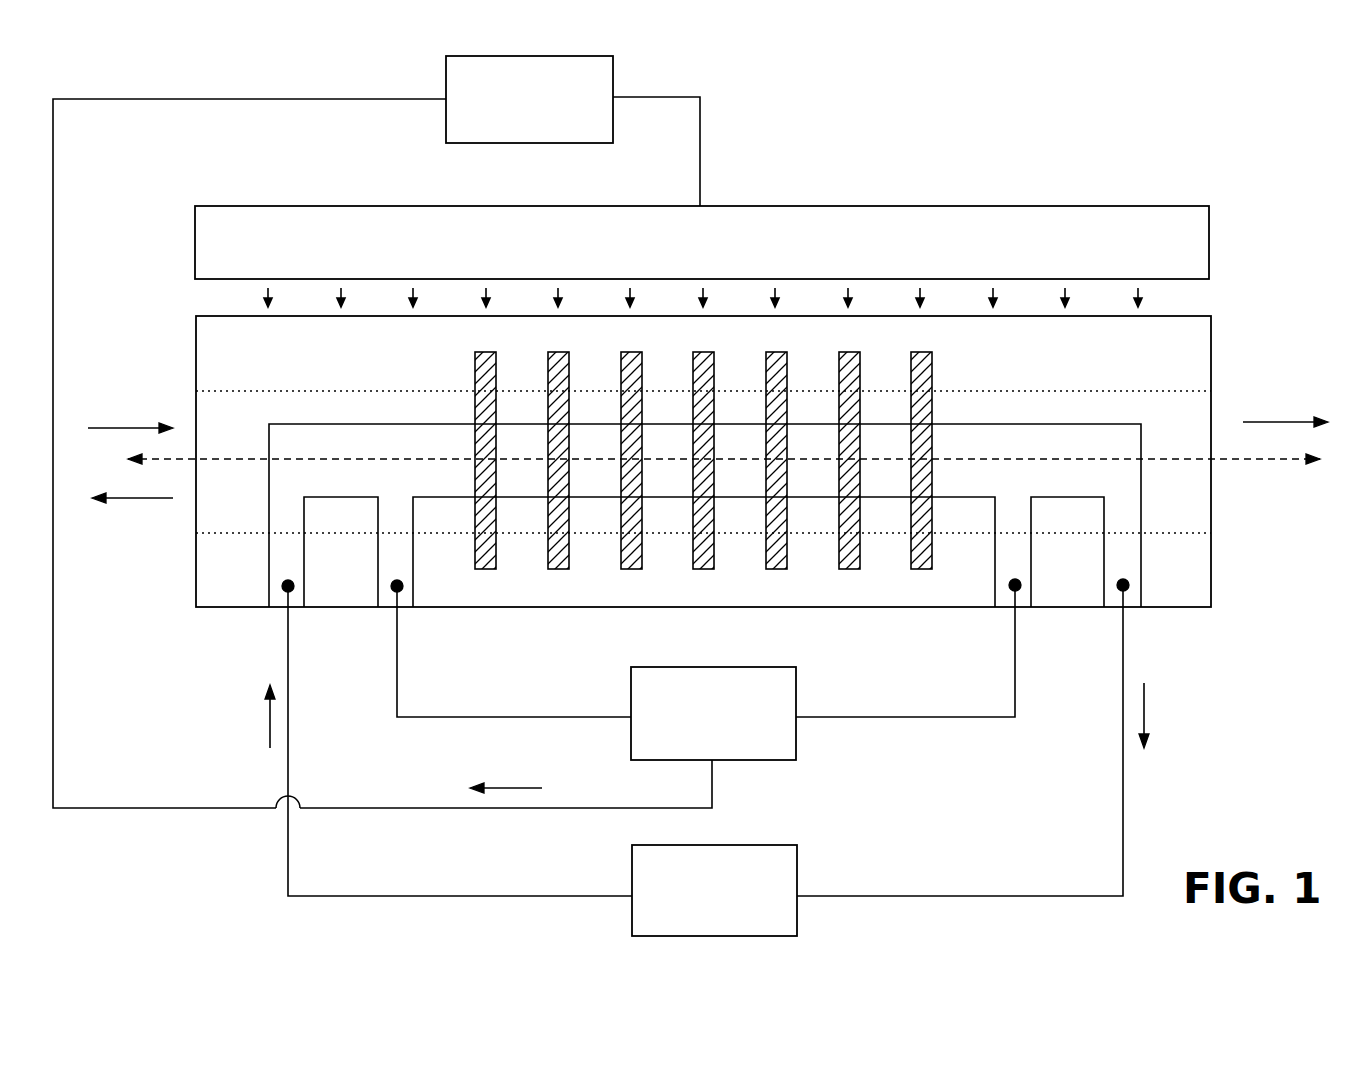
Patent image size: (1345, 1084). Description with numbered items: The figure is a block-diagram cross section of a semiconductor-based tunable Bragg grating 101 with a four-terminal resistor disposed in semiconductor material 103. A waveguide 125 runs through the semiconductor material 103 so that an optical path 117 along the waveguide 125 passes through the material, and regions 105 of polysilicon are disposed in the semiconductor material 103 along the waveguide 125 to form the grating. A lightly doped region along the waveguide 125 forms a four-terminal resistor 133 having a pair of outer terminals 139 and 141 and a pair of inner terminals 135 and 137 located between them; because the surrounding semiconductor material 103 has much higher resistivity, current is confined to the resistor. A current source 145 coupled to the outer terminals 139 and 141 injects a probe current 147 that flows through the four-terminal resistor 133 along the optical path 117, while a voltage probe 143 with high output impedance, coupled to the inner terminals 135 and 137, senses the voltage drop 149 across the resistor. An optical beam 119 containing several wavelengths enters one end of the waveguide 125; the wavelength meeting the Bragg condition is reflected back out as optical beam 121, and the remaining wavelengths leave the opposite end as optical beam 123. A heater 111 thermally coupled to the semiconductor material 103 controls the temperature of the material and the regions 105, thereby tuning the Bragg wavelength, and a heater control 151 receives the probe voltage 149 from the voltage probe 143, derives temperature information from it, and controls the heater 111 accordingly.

The tunable Bragg grating 101 is at (1221, 81).
The semiconductor material 103 is at (1242, 336).
The regions 105 is at (554, 570).
The heater 111 is at (1240, 220).
The optical path 117 is at (1290, 462).
The optical beam 119 is at (135, 432).
The optical beam 121 is at (122, 503).
The optical beam 123 is at (1303, 380).
The waveguide 125 is at (1242, 522).
The four-terminal resistor 133 is at (1085, 424).
The inner terminal 135 is at (420, 608).
The inner terminal 137 is at (1000, 608).
The outer terminal 139 is at (310, 608).
The outer terminal 141 is at (1100, 608).
The voltage probe 143 is at (797, 680).
The current source 145 is at (797, 866).
The probe current 147 is at (245, 704).
The probe voltage 149 is at (538, 742).
The heater control 151 is at (640, 66).